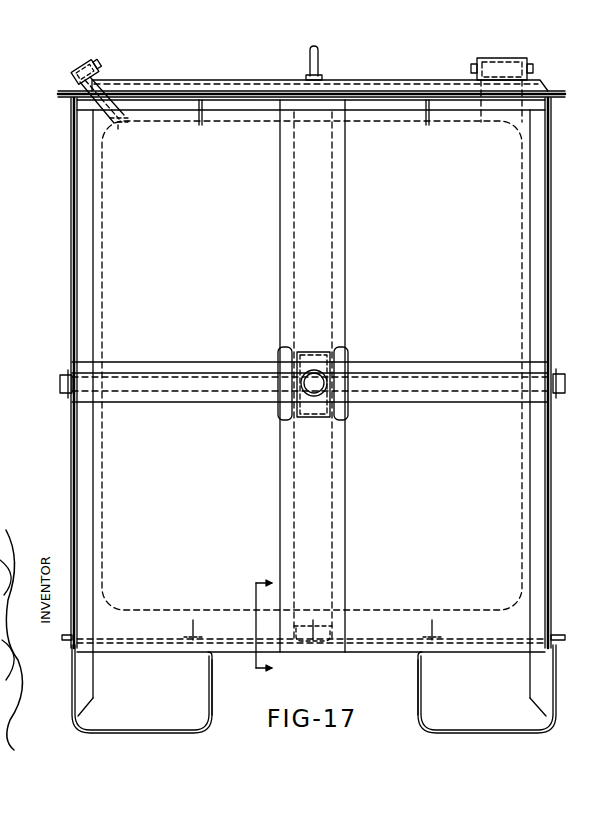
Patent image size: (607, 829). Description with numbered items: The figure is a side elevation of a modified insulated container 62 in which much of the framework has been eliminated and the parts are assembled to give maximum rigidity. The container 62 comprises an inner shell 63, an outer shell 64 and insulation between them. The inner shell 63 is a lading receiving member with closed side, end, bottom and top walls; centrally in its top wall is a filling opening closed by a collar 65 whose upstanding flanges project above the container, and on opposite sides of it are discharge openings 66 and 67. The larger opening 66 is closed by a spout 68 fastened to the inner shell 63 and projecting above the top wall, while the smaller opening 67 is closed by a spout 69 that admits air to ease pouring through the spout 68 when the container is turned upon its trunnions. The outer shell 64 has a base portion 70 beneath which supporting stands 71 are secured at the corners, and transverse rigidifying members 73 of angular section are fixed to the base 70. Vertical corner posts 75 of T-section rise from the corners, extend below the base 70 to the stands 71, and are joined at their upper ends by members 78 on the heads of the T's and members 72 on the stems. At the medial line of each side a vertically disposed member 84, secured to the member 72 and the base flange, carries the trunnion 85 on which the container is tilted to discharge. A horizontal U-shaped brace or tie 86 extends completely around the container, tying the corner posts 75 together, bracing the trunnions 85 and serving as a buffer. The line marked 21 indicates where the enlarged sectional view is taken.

The section line 21— 21 is at (250, 626).
The container 62 is at (152, 80).
The inner shell 63 is at (176, 122).
The outer shell 64 is at (370, 104).
The collar 65 is at (210, 124).
The discharge opening 66 is at (502, 122).
The discharge opening 67 is at (118, 120).
The spout 68 is at (470, 80).
The spout 69 is at (92, 95).
The base portion 70 is at (402, 648).
The supporting stands 71 is at (212, 699).
The members 72 is at (392, 110).
The rigidifying members 73 is at (190, 628).
The vertical corner posts 75 is at (96, 671).
The members 78 is at (70, 100).
The vertically disposed members 84 is at (346, 266).
The trunnions 85 is at (314, 352).
The horizontally disposed brace or tie 86 is at (152, 362).